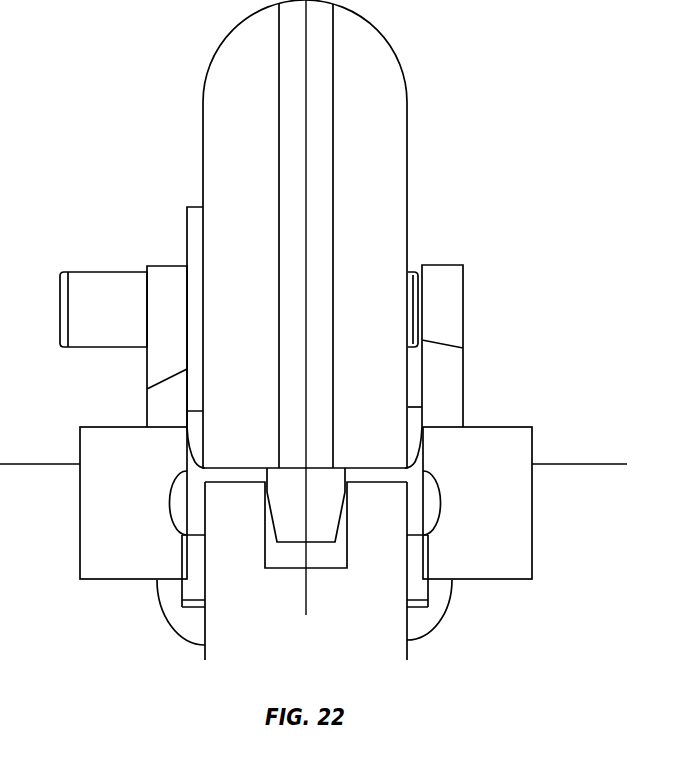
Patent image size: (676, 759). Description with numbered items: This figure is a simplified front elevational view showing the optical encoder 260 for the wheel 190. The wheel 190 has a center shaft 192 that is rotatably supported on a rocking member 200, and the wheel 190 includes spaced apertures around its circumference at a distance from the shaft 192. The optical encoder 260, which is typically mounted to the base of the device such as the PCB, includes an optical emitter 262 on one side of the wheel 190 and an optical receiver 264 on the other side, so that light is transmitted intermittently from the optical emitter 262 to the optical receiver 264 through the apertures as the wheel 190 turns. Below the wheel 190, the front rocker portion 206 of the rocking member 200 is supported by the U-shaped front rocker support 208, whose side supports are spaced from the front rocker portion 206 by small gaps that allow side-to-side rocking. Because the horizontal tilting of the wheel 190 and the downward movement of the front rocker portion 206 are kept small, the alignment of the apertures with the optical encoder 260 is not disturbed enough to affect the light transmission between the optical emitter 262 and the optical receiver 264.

The wheel 190 is at (378, 48).
The shaft 192 is at (110, 280).
The rocking member 200 is at (453, 373).
The front rocker portion 206 is at (329, 519).
The front rocker support 208 is at (398, 648).
The optical encoder 260 is at (313, 504).
The optical emitter 262 is at (119, 571).
The optical receiver 264 is at (492, 572).